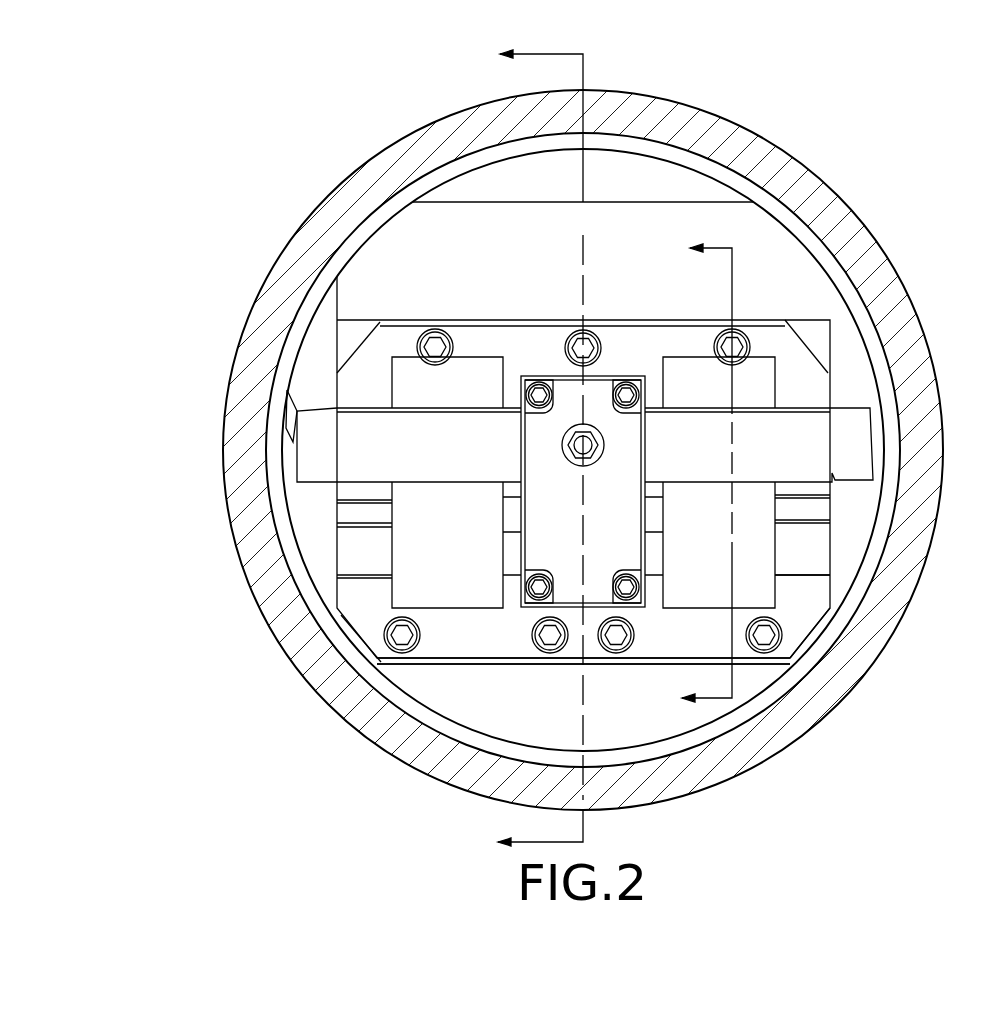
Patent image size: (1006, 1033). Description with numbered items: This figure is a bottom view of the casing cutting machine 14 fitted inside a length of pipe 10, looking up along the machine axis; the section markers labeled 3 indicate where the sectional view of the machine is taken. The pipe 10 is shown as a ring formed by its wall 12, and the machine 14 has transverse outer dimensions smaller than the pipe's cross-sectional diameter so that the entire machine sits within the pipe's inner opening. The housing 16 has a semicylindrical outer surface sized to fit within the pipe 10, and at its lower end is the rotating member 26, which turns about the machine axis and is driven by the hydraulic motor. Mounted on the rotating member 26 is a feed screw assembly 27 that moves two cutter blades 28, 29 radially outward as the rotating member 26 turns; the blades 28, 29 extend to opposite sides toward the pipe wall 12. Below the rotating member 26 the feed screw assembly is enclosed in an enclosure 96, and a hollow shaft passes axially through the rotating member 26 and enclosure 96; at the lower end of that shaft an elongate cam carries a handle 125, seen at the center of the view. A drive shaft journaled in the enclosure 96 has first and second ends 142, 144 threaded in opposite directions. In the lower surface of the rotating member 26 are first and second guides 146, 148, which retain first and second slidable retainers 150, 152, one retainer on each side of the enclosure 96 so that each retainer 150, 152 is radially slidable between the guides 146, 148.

The pipe 10 is at (818, 177).
The wall 12 is at (255, 647).
The casing cutting machine 14 is at (333, 545).
The housing 16 is at (448, 192).
The rotating member 26 is at (423, 687).
The feed screw assembly 27 is at (517, 612).
The cutter blade 28 is at (313, 413).
The cutter blade 29 is at (853, 408).
The enclosure 96 is at (635, 608).
The handle 125 is at (585, 432).
The first end of drive shaft 142 is at (808, 523).
The second end of drive shaft 144 is at (373, 528).
The first guide 146 is at (810, 595).
The second guide 148 is at (802, 367).
The first slidable retainer 150 is at (775, 592).
The second slidable retainer 152 is at (392, 608).
The section line 3 is at (528, 445).